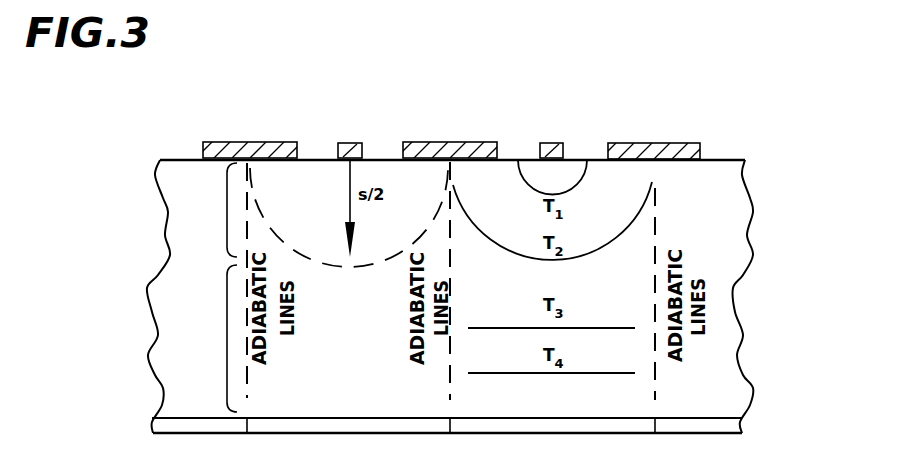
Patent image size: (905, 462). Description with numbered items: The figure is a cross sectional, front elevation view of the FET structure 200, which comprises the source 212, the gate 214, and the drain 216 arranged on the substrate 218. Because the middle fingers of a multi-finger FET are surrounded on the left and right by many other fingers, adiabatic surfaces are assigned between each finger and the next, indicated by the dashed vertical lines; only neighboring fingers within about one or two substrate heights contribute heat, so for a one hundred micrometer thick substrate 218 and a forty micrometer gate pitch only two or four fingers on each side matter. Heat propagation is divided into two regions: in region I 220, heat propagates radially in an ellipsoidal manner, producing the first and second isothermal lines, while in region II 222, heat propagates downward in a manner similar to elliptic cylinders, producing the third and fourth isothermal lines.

The FET structure 200 is at (735, 109).
The source 212 is at (498, 150).
The gate 214 is at (339, 152).
The drain 216 is at (203, 153).
The substrate 218 is at (110, 261).
The region I 220 is at (158, 196).
The region II 222 is at (166, 339).